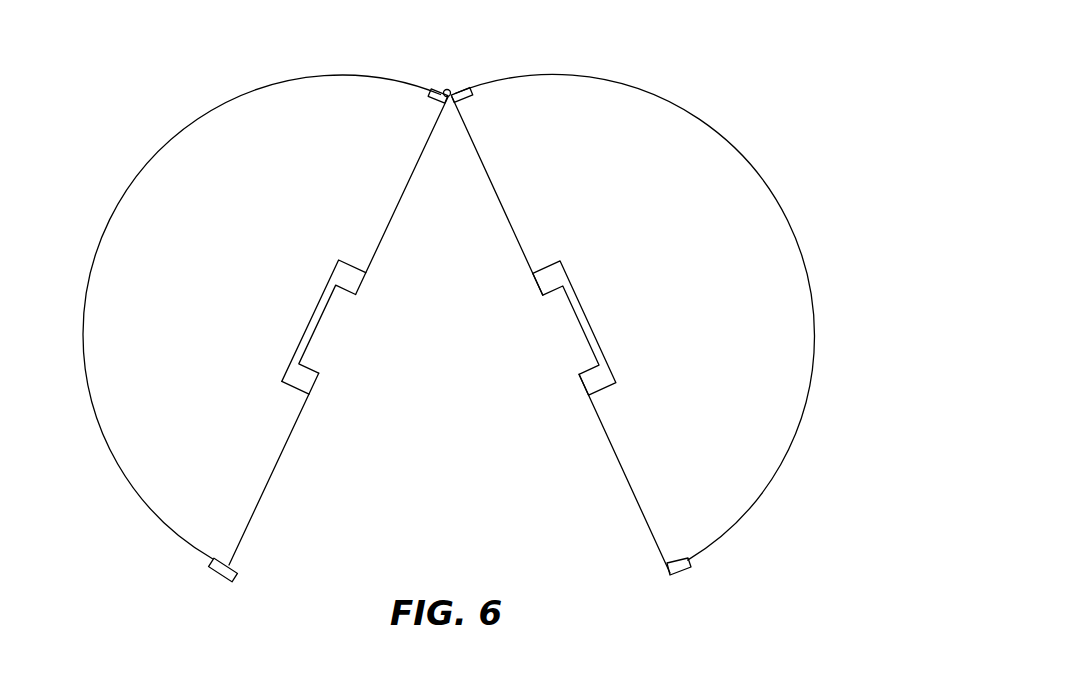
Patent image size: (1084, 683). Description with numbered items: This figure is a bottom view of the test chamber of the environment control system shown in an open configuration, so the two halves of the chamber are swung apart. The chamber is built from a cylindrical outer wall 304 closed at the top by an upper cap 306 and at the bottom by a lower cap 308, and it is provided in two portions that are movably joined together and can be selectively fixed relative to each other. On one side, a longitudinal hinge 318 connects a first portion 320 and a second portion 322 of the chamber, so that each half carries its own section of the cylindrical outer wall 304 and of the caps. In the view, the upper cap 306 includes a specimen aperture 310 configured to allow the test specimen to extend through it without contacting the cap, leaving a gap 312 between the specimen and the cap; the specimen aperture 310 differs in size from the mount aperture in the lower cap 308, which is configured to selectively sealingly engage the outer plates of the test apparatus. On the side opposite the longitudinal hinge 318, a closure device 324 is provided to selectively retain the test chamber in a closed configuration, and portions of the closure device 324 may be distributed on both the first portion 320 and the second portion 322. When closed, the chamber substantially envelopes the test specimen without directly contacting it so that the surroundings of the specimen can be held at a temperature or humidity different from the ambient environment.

The cylindrical outer wall 304 is at (205, 162).
The upper cap 306 is at (345, 280).
The lower cap 308 is at (496, 281).
The specimen aperture 310 is at (318, 330).
The gap 312 is at (312, 383).
The longitudinal hinge 318 is at (456, 92).
The first portion 320 is at (717, 284).
The second portion 322 is at (246, 284).
The closure device 324 is at (205, 588).